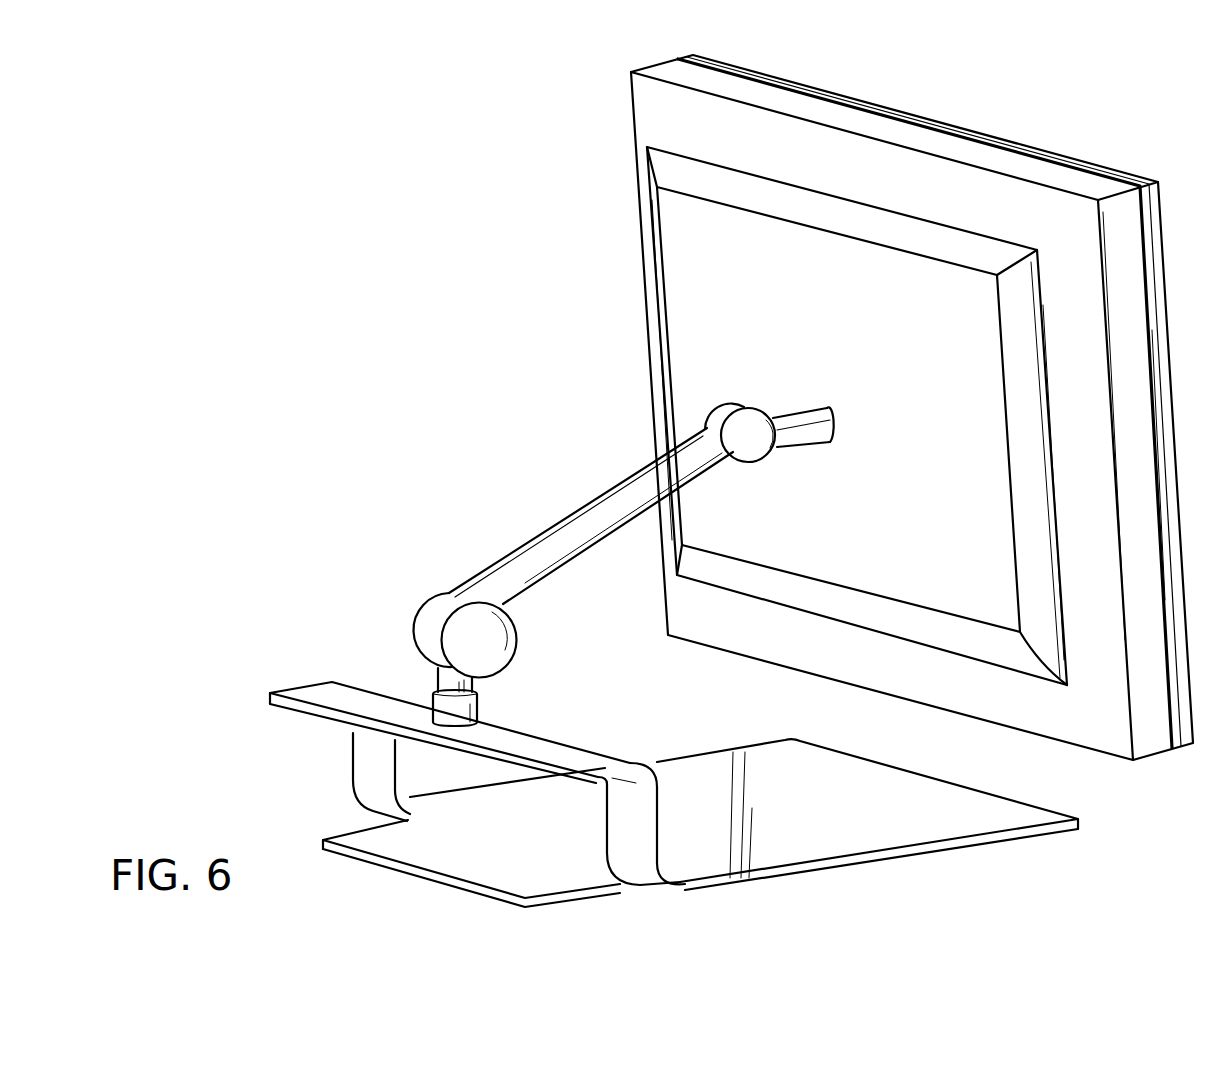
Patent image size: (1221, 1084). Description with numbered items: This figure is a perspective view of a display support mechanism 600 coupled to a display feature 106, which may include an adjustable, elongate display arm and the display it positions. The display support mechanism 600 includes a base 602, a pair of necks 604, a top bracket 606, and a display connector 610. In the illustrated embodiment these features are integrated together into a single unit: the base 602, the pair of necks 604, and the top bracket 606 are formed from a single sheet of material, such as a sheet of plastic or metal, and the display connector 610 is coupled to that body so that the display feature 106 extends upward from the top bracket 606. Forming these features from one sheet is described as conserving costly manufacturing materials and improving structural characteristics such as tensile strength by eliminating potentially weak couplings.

The display feature 106 is at (608, 488).
The display support mechanism 600 is at (326, 562).
The base 602 is at (885, 838).
The pair of necks 604 is at (367, 773).
The top bracket 606 is at (323, 683).
The display connector 610 is at (480, 712).